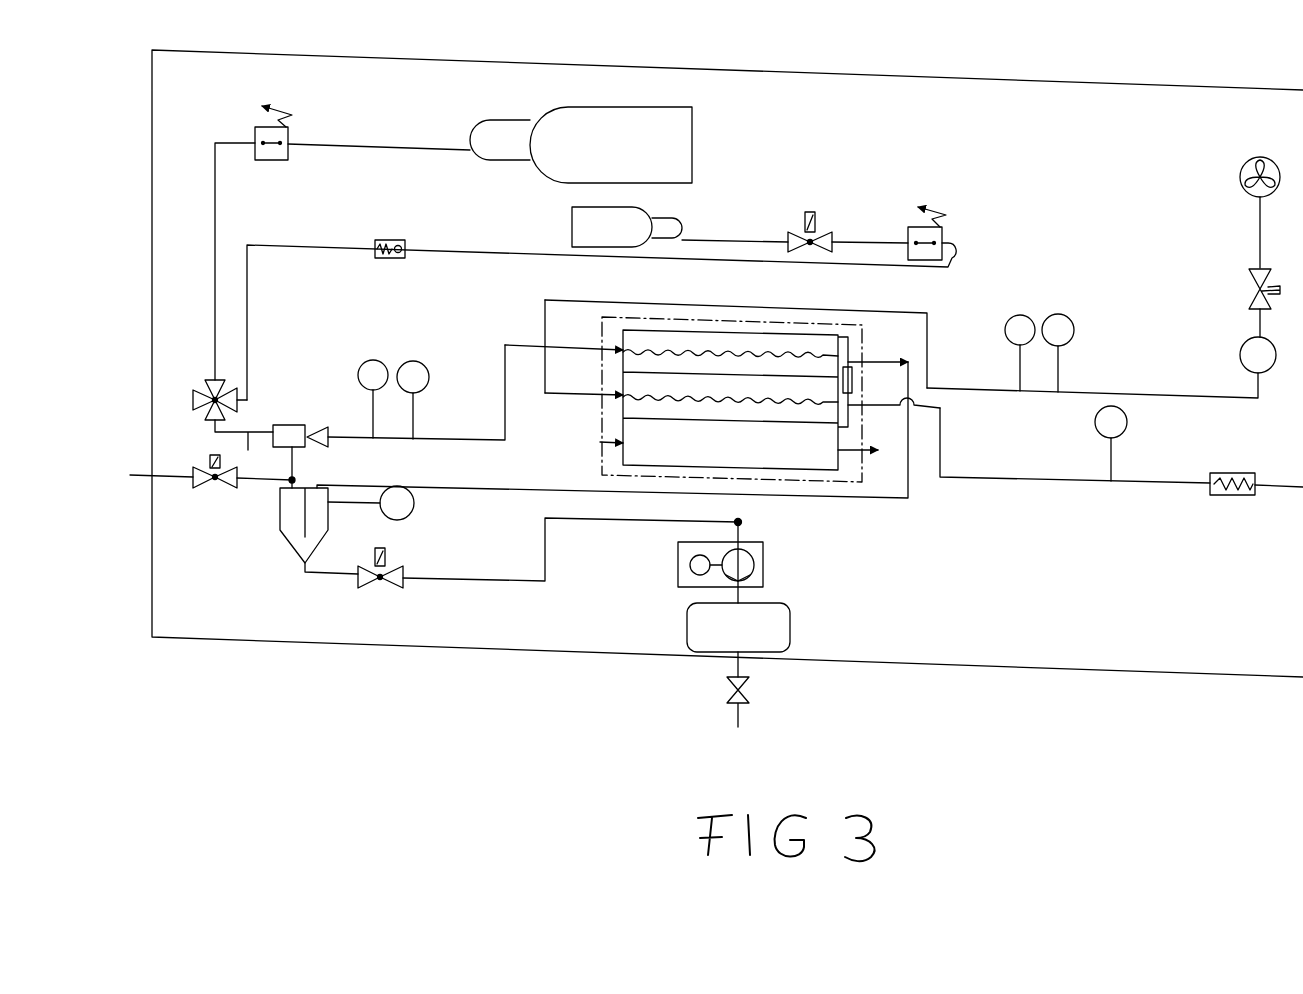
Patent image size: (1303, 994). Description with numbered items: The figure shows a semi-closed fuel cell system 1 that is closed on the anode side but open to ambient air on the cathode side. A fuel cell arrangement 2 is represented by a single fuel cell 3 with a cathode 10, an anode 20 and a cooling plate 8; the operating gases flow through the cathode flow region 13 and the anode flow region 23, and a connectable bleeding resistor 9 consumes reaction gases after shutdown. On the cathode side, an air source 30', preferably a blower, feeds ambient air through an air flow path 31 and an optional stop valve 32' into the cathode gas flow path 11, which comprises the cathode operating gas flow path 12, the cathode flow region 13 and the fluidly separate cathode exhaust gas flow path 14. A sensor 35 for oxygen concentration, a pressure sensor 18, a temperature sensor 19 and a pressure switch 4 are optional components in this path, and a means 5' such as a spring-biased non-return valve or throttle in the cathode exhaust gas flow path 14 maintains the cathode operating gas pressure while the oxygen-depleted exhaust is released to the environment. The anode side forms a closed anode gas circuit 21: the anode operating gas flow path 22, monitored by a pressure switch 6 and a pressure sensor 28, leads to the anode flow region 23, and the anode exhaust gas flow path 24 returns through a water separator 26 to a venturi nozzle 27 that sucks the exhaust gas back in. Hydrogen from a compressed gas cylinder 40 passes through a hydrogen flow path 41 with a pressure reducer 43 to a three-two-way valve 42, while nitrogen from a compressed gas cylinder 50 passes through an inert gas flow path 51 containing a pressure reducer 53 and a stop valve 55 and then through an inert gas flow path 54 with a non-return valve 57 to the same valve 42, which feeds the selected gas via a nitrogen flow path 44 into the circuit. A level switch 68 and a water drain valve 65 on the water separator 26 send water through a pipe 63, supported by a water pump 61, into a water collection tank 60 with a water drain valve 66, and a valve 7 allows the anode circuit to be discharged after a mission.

The fuel cell system 1 is at (1055, 72).
The fuel cell arrangement 2 is at (737, 320).
The fuel cell 3 is at (802, 333).
The pressure switch 4 is at (1058, 353).
The means for providing resistance 5' is at (1223, 528).
The pressure switch 6 is at (373, 399).
The valve 7 is at (200, 490).
The cooling plate 8 is at (602, 455).
The bleeding resistor 9 is at (854, 380).
The cathode 10 is at (620, 407).
The cathode gas circuit 11 is at (971, 384).
The cathode operating gas flow path 12 is at (997, 391).
The cathode flow region 13 is at (820, 401).
The cathode exhaust gas flow path 14 is at (1000, 481).
The pressure sensor 18 is at (1020, 353).
The temperature sensor 19 is at (1111, 443).
The anode 20 is at (602, 335).
The anode gas circuit 21 is at (503, 385).
The anode operating gas flow path 22 is at (472, 438).
The anode flow region 23 is at (665, 350).
The anode exhaust gas flow path 24 is at (298, 462).
The water separator 26 is at (286, 548).
The venturi nozzle 27 is at (283, 423).
The pressure sensor 28 is at (413, 400).
The air source 30' is at (1242, 148).
The air flow path 31 is at (1258, 242).
The stop valve 32' is at (1225, 281).
The sensor 35 is at (1240, 346).
The compressed gas cylinder 40 is at (581, 145).
The hydrogen flow path 41 is at (386, 142).
The 3-2-way valve 42 is at (208, 382).
The pressure reducer 43 is at (240, 127).
The nitrogen flow path 44 is at (244, 448).
The compressed gas cylinder 50 is at (627, 227).
The inert gas flow path 51 is at (742, 240).
The pressure reducer 53 is at (946, 228).
The inert gas flow path 54 is at (497, 252).
The stop valve 55 is at (838, 240).
The non-return valve 57 is at (388, 240).
The water collection tank 60 is at (738, 640).
The water pump 61 is at (677, 566).
The pipe 63 is at (500, 584).
The water drain valve 65 is at (395, 589).
The water drain valve 66 is at (748, 680).
The level switch 68 is at (371, 503).